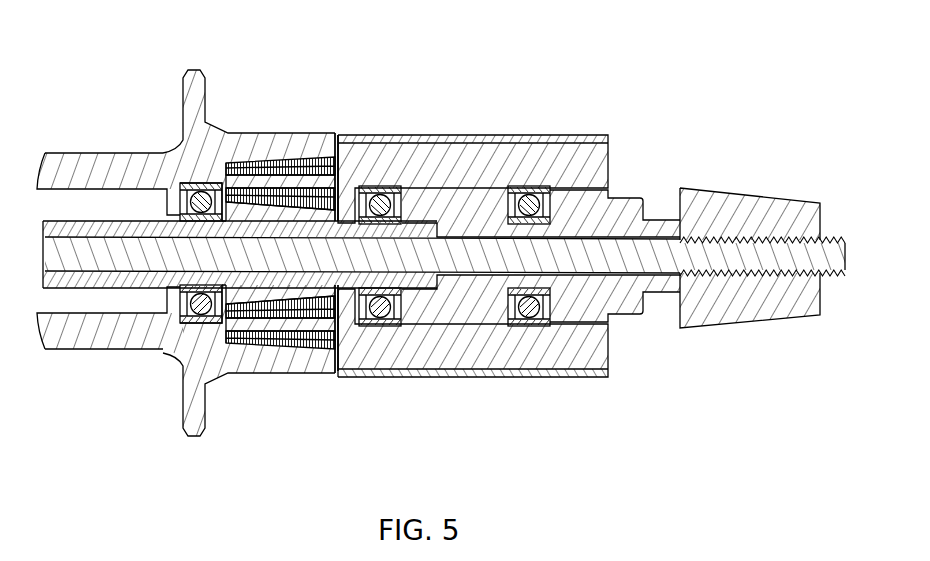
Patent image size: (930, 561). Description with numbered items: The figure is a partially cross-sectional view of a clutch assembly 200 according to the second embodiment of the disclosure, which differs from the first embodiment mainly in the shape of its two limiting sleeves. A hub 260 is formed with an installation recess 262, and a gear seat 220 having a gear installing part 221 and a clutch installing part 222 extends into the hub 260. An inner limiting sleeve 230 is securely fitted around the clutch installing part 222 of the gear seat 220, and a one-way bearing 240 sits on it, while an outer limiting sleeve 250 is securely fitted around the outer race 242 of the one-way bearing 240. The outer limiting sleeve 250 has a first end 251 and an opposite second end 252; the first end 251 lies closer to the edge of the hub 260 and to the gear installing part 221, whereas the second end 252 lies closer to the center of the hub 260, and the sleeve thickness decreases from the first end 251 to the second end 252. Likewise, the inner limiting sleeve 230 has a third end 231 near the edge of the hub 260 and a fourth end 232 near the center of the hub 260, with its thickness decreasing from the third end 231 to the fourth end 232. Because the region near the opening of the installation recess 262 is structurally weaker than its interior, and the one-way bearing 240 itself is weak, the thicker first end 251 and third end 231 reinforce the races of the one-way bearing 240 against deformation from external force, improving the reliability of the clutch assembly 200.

The clutch assembly 200 is at (62, 43).
The hub 260 is at (91, 149).
The installation recess 262 is at (233, 328).
The fourth end 232 is at (200, 192).
The second end 252 is at (232, 185).
The one-way bearing 240 is at (252, 166).
The outer race 242 is at (298, 162).
The inner limiting sleeve 230 is at (284, 210).
The outer limiting sleeve 250 is at (332, 162).
The first end 251 is at (340, 148).
The third end 231 is at (360, 190).
The gear installing part 221 is at (509, 278).
The clutch installing part 222 is at (255, 246).
The gear seat 220 is at (411, 259).